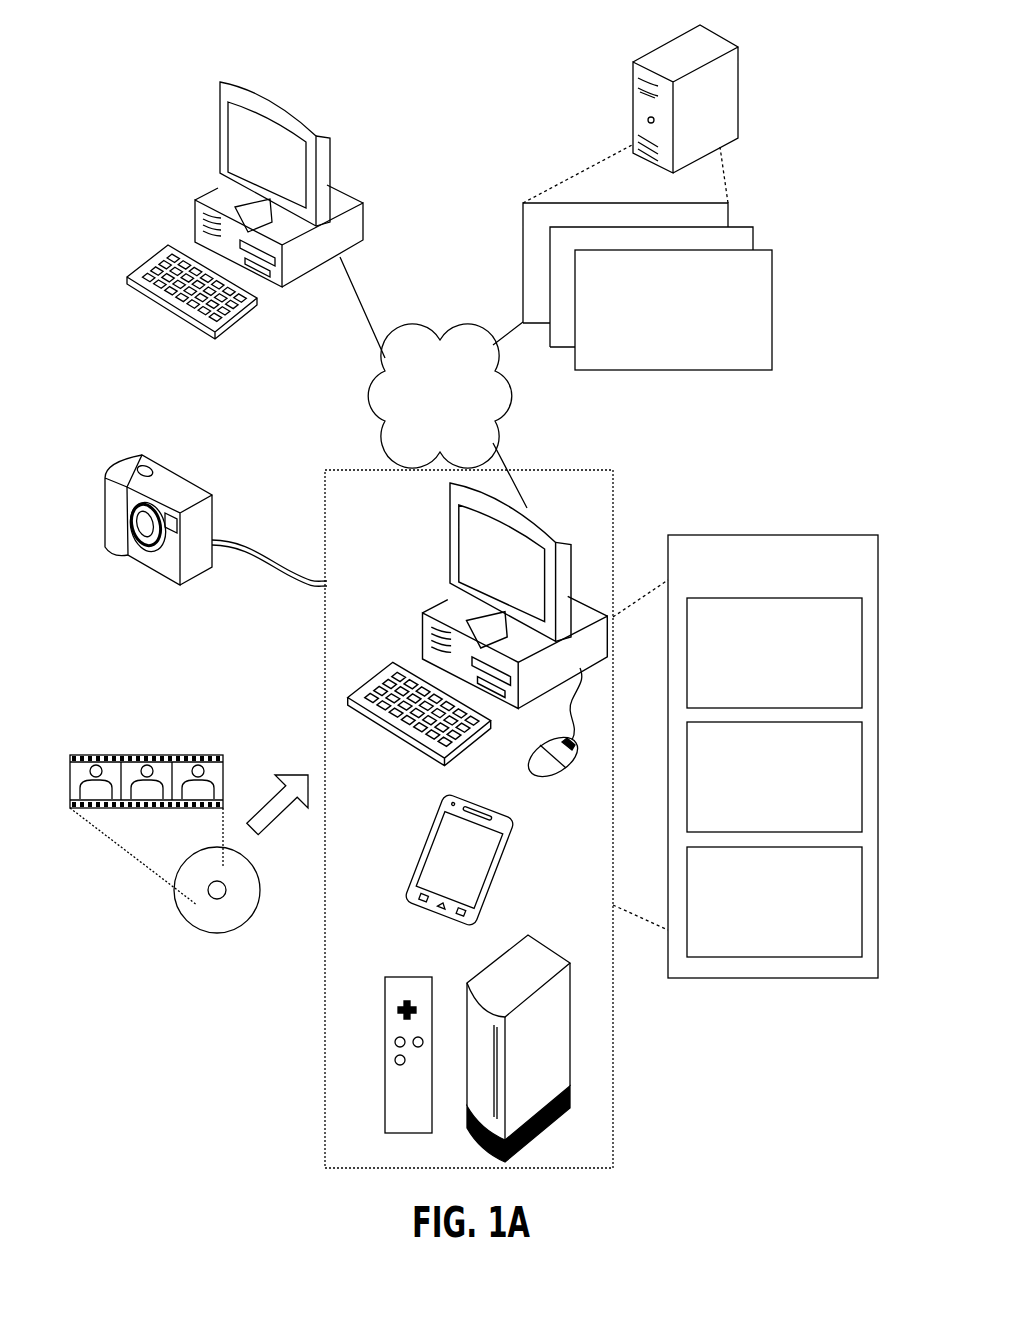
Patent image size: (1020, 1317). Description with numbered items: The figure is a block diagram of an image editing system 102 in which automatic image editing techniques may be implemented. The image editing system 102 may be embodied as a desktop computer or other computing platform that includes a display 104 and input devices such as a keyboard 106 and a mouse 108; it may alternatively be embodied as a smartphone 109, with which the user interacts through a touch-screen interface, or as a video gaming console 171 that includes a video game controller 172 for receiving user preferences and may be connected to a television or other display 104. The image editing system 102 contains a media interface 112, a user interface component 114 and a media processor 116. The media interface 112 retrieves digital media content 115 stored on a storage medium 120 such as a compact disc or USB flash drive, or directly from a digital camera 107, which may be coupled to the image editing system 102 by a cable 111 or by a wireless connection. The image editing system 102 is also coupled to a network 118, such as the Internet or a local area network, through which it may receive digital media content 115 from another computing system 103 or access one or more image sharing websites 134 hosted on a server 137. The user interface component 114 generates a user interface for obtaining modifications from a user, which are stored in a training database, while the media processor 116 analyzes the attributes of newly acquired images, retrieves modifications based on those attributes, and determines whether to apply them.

The image editing system 102 is at (773, 756).
The computing system 103 is at (218, 108).
The display 104 is at (450, 540).
The keyboard 106 is at (402, 730).
The digital camera 107 is at (125, 463).
The mouse 108 is at (528, 770).
The smartphone 109 is at (430, 823).
The cable 111 is at (242, 545).
The media interface 112 is at (774, 653).
The user interface component 114 is at (774, 777).
The digital media content 115 is at (141, 738).
The media processor 116 is at (774, 902).
The network 118 is at (440, 396).
The storage medium 120 is at (260, 886).
The image sharing websites 134 is at (647, 286).
The server 137 is at (657, 45).
The video gaming console 171 is at (490, 963).
The video game controller 172 is at (385, 995).